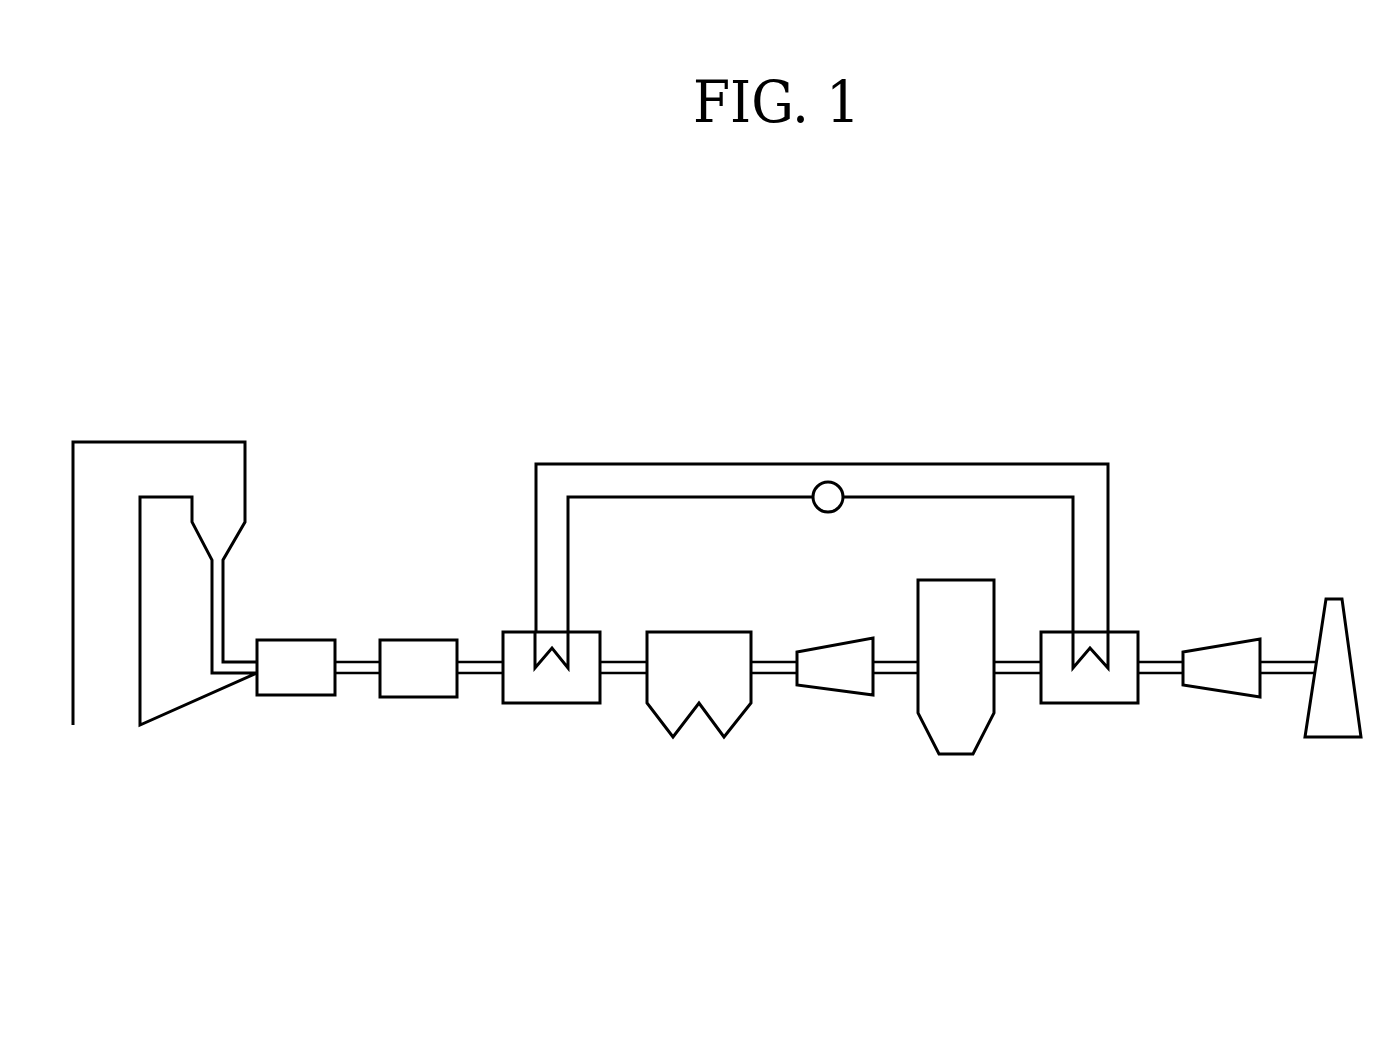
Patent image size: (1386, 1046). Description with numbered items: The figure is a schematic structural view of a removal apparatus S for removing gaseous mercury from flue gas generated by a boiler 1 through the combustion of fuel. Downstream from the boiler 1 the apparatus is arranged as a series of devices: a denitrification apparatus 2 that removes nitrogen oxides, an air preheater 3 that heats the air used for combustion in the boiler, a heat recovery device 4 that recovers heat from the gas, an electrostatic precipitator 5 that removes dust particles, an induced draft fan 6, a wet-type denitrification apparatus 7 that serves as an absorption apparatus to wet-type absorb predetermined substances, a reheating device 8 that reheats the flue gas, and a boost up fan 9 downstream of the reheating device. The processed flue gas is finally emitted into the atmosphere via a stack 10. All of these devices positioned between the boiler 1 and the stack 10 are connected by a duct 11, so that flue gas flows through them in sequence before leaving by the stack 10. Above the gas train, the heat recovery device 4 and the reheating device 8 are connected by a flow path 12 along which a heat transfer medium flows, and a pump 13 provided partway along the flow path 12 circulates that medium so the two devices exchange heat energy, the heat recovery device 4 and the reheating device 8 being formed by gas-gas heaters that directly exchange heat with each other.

The removal apparatus S is at (1107, 405).
The boiler 1 is at (100, 710).
The denitrification apparatus 2 is at (292, 683).
The air preheater 3 is at (418, 698).
The heat recovery device 4 is at (557, 705).
The electrostatic precipitator 5 is at (707, 717).
The induced draft fan 6 is at (833, 690).
The wet-type denitrification apparatus 7 is at (952, 757).
The reheating device 8 is at (1088, 705).
The boost up fan 9 is at (1217, 690).
The stack 10 is at (1335, 727).
The duct 11 is at (223, 587).
The flow path 12 is at (822, 463).
The pump 13 is at (838, 510).